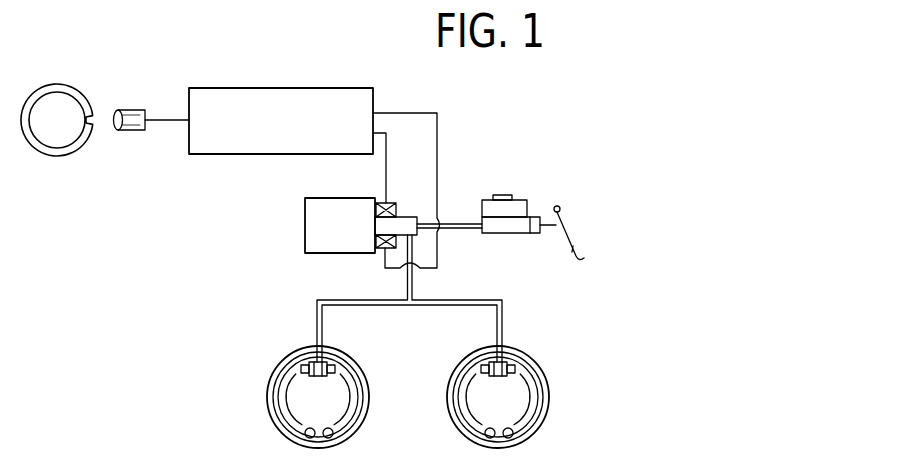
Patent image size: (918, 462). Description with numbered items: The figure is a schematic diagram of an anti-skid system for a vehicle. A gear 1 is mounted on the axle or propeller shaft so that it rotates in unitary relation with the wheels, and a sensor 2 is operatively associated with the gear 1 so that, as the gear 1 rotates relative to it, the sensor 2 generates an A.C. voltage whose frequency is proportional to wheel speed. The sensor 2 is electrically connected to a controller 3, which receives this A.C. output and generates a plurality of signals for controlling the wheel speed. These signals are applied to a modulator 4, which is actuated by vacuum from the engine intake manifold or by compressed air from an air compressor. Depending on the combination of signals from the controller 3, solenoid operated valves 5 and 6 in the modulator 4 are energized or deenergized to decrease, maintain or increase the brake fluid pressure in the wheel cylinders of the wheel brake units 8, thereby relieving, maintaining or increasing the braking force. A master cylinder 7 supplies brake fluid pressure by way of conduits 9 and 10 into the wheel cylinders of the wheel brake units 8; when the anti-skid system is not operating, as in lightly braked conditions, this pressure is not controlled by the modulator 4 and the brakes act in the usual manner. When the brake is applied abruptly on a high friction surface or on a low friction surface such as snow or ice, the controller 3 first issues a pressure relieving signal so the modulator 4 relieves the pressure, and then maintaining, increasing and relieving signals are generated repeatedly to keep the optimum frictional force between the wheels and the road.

The gear 1 is at (60, 84).
The sensor 2 is at (132, 108).
The controller 3 is at (288, 88).
The modulator 4 is at (305, 215).
The solenoid operated valve 5 is at (392, 201).
The solenoid operated valve 6 is at (381, 250).
The master cylinder 7 is at (506, 234).
The wheel brake units 8 is at (350, 357).
The conduit 9 is at (458, 222).
The conduit 10 is at (415, 286).